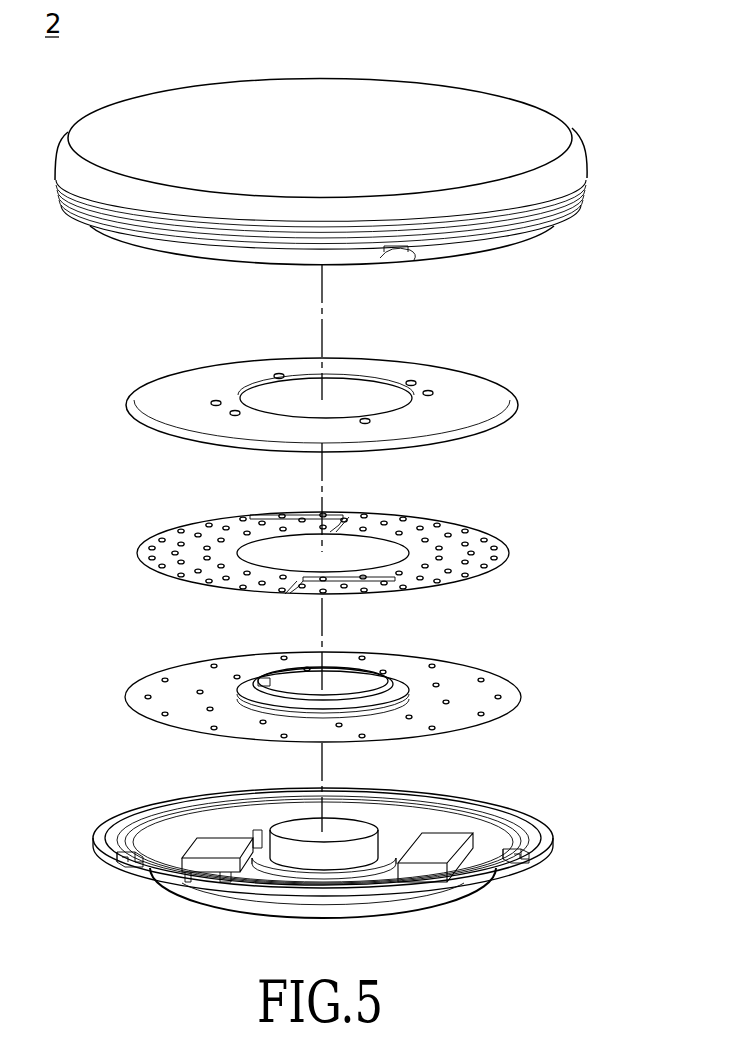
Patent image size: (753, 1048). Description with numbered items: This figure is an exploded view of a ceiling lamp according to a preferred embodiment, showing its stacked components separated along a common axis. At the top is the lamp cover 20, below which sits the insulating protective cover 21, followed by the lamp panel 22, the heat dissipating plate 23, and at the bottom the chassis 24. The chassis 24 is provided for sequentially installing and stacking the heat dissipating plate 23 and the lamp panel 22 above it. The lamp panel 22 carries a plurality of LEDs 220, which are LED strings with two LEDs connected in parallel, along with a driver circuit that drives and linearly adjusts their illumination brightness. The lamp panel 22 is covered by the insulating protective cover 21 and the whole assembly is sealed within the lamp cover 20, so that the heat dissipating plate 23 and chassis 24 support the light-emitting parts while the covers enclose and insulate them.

The lamp cover 20 is at (527, 117).
The insulating protective cover 21 is at (485, 392).
The lamp panel 22 is at (385, 540).
The LEDs 220 is at (443, 533).
The heat dissipating plate 23 is at (492, 682).
The chassis 24 is at (510, 815).